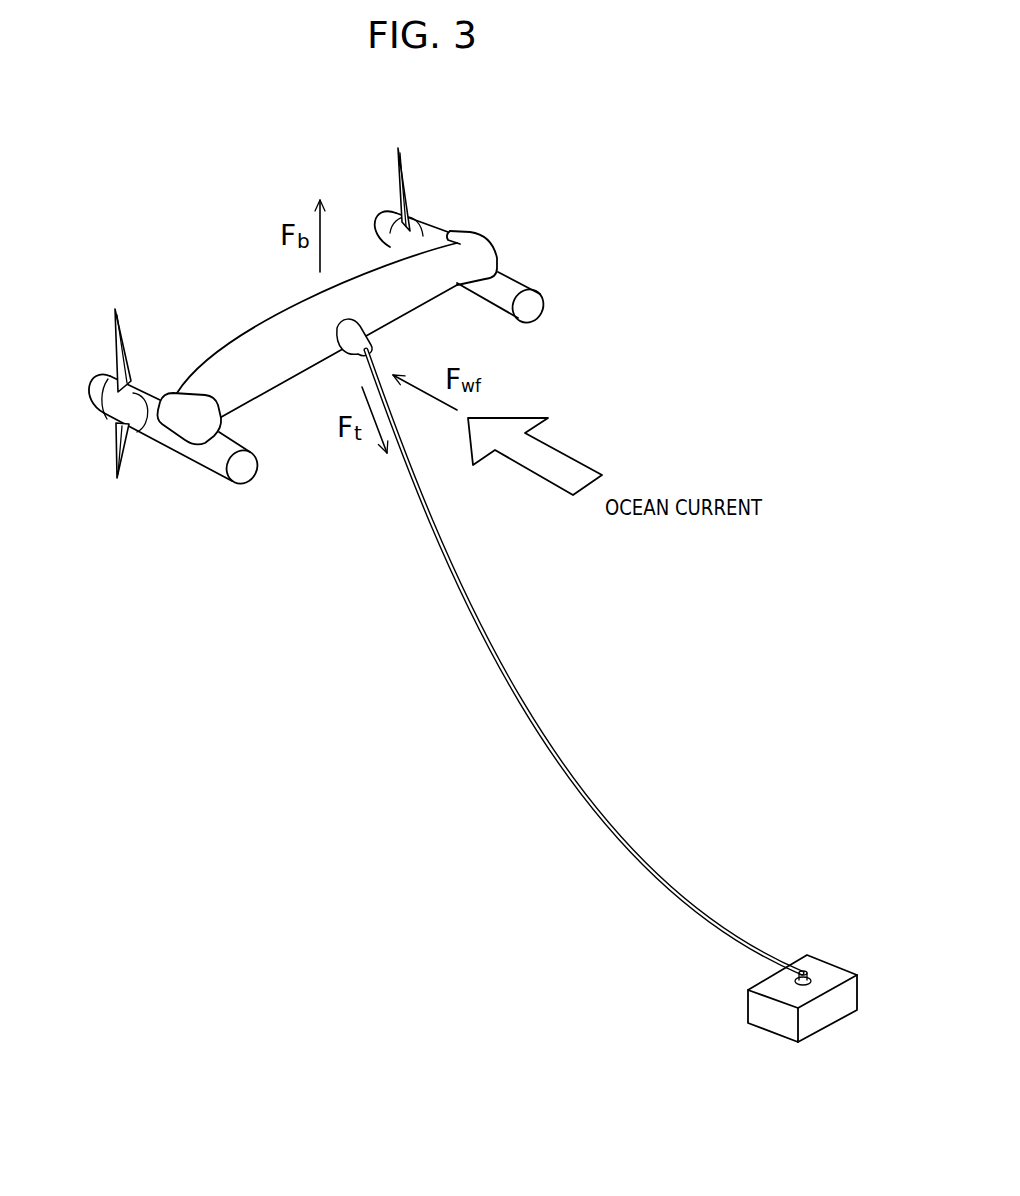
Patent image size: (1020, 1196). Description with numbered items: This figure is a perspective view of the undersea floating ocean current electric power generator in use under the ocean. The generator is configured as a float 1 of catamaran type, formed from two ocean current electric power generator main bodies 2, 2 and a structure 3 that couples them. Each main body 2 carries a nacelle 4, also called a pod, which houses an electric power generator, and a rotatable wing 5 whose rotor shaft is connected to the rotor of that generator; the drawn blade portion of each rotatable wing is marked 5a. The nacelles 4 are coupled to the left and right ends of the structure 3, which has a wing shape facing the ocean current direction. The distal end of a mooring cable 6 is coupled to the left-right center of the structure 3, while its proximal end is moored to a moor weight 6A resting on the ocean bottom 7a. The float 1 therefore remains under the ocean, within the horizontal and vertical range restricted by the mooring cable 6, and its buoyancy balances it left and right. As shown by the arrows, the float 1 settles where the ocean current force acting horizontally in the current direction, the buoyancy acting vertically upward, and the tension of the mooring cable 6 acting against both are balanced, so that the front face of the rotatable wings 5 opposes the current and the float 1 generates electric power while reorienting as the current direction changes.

The float 1 is at (281, 293).
The ocean current electric power generator main body 2 is at (170, 457).
The structure 3 is at (248, 343).
The nacelle 4 is at (218, 454).
The rotatable wing 5 is at (128, 333).
The rotor blade 5a is at (116, 352).
The mooring cable 6 is at (518, 712).
The moor weight 6A is at (834, 968).
The ocean bottom 7a is at (688, 1004).